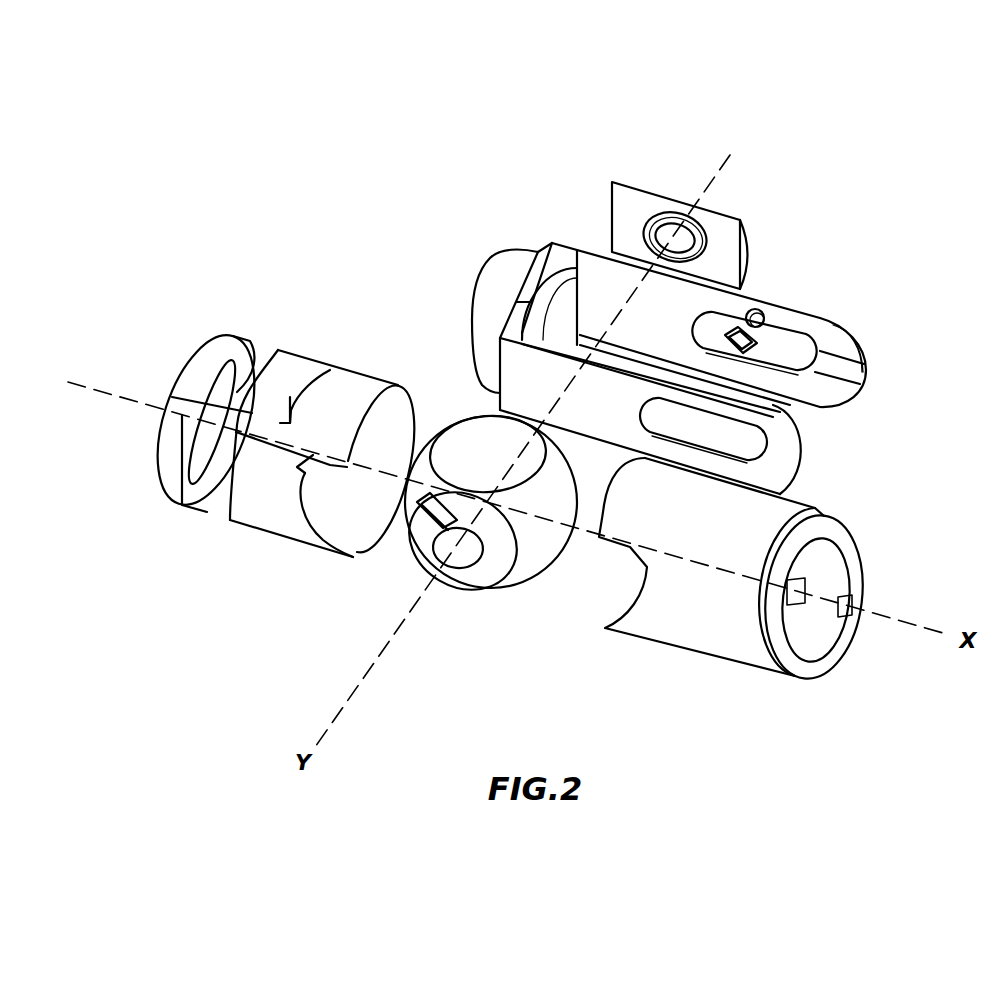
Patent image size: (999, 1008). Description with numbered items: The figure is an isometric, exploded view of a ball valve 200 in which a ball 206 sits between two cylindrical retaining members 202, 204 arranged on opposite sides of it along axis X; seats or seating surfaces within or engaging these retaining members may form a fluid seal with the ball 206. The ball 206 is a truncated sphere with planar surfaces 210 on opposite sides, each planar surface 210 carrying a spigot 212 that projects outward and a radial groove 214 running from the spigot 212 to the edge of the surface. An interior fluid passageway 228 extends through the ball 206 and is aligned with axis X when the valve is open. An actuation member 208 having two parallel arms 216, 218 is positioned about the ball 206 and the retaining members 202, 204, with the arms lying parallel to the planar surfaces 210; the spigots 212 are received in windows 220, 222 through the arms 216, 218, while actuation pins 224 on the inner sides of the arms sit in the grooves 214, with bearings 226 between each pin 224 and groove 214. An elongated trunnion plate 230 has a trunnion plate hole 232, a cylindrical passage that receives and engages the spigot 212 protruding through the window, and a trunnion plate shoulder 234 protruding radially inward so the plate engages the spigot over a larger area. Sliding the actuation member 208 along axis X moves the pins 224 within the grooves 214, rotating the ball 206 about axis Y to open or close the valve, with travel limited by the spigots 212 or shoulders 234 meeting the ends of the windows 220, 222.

The ball valve 200 is at (236, 220).
The cylindrical retaining member 202 is at (273, 503).
The cylindrical retaining member 204 is at (707, 642).
The ball 206 is at (436, 509).
The actuation member 208 is at (690, 322).
The planar surface 210 is at (480, 575).
The spigot 212 is at (452, 557).
The radial groove 214 is at (435, 530).
The arm 216 is at (726, 444).
The arm 218 is at (833, 323).
The window 220 is at (727, 430).
The window 222 is at (793, 350).
The actuation pin 224 is at (757, 307).
The bearing 226 is at (740, 327).
The interior fluid passageway 228 is at (467, 440).
The elongated trunnion plate 230 is at (683, 189).
The trunnion plate hole 232 is at (667, 228).
The trunnion plate shoulder 234 is at (690, 222).